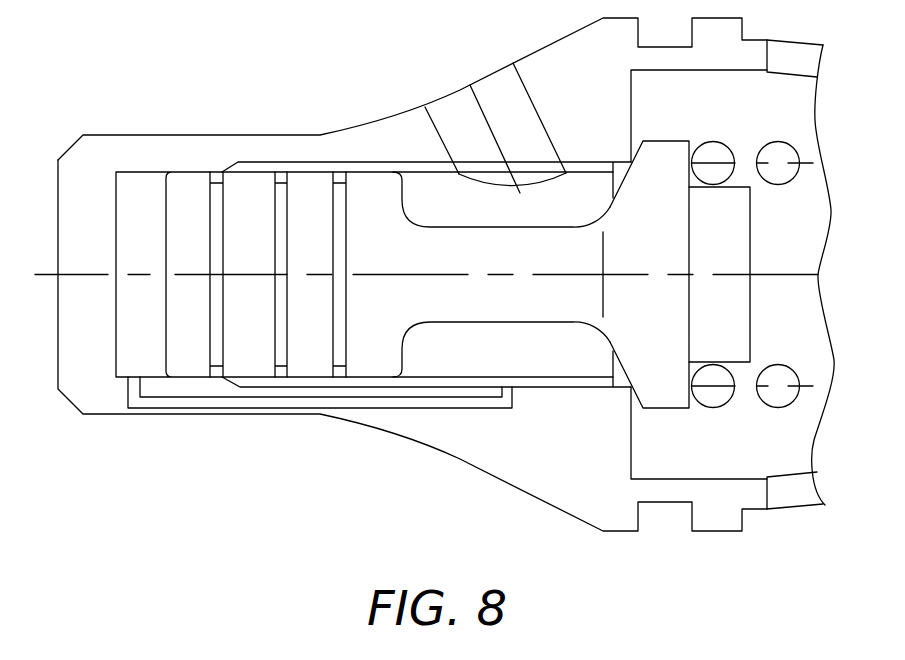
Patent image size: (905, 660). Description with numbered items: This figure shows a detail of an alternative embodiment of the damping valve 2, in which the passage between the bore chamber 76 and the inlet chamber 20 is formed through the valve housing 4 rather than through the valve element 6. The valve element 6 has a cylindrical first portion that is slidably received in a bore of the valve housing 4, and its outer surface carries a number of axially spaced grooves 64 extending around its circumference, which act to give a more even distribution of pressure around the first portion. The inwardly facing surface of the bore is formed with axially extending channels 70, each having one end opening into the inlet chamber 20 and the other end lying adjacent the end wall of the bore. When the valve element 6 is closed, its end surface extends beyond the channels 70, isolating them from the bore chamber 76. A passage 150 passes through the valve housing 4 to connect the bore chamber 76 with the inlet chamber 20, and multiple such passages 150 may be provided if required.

The damping valve 2 is at (405, 468).
The valve housing 4 is at (81, 157).
The valve element 6 is at (372, 187).
The inlet chamber 20 is at (535, 355).
The grooves 64 is at (336, 178).
The channels 70 is at (578, 425).
The bore chamber 76 is at (137, 185).
The passage 150 is at (170, 400).